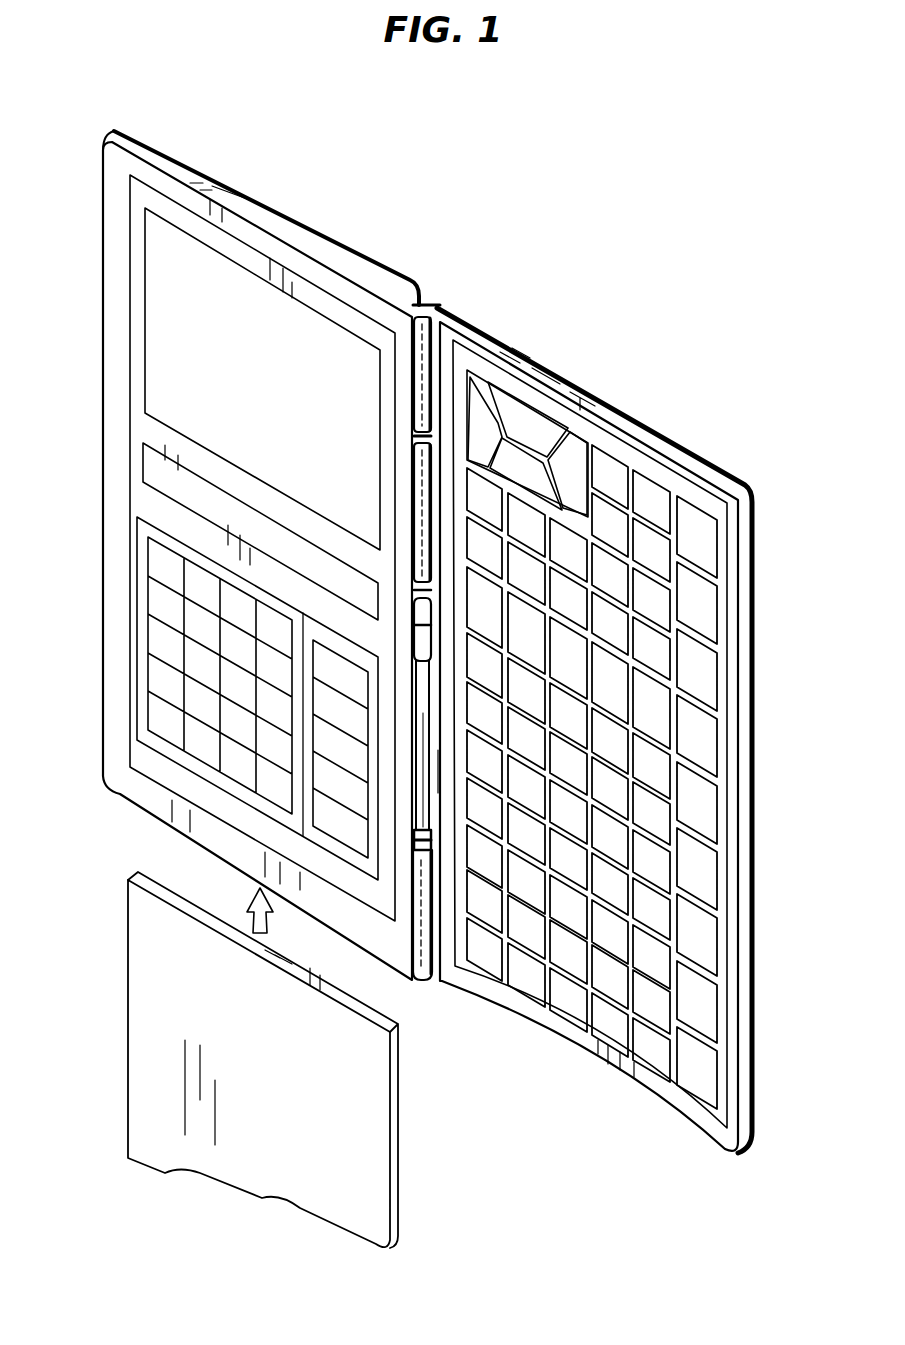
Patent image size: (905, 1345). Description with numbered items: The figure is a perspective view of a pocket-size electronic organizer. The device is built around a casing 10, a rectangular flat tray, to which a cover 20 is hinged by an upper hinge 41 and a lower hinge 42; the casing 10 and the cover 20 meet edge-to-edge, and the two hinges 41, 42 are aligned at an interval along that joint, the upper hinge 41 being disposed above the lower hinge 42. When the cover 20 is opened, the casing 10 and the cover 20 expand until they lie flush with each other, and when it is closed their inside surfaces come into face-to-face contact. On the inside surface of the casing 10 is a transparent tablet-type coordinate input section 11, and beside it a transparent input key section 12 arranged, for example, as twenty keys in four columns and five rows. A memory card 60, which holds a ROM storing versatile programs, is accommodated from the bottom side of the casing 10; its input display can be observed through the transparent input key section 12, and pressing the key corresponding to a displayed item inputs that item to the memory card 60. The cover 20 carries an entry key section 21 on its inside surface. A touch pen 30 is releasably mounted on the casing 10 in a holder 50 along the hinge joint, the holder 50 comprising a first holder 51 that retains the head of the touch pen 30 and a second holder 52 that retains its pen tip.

The casing 10 is at (332, 214).
The coordinate input section 11 is at (158, 375).
The input key section 12 is at (155, 752).
The cover 20 is at (600, 352).
The entry key section 21 is at (573, 1030).
The touch pen 30 is at (425, 798).
The upper hinge 41 is at (439, 425).
The lower hinge 42 is at (443, 893).
The holder 50 is at (409, 605).
The first holder 51 is at (413, 641).
The second holder 52 is at (420, 848).
The memory card 60 is at (397, 1113).